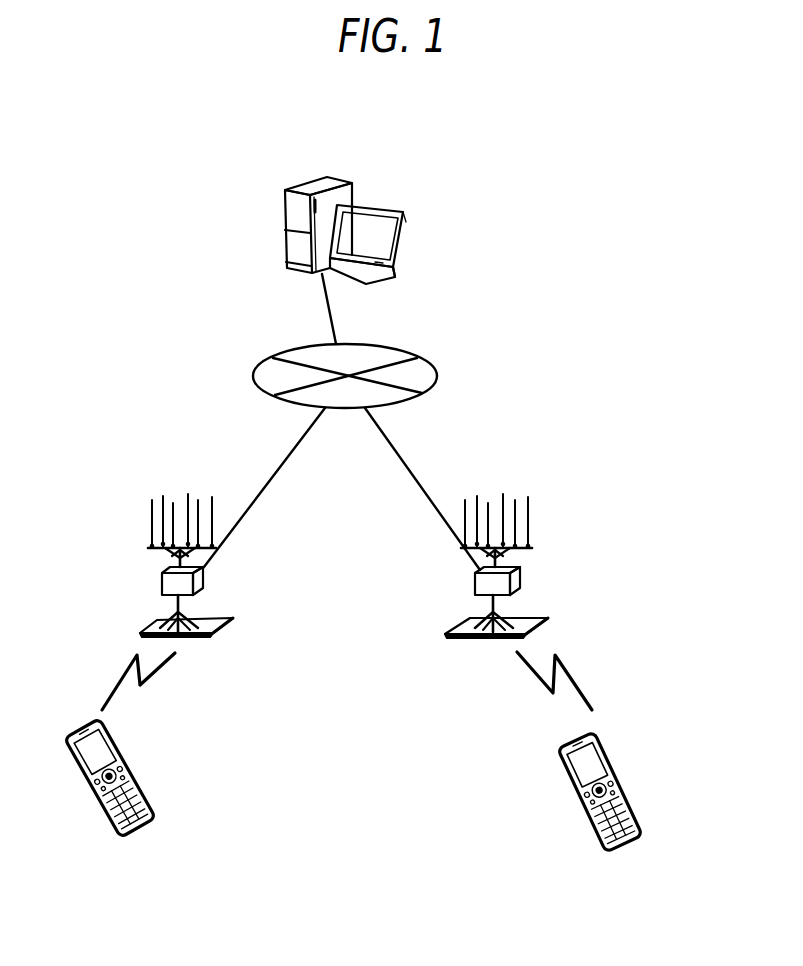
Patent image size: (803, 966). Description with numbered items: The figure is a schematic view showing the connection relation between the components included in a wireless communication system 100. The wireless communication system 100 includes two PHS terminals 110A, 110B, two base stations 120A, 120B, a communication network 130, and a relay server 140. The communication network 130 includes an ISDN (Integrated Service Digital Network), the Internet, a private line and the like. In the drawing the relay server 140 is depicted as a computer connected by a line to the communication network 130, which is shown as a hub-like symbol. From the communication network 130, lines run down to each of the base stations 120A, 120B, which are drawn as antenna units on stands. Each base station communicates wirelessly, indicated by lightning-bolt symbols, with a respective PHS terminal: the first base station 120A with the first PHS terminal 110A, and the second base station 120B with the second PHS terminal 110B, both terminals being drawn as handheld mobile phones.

The wireless communication system 100 is at (556, 238).
The PHS terminal 110A is at (137, 765).
The PHS terminal 110B is at (640, 778).
The base station 120A is at (205, 582).
The base station 120B is at (520, 581).
The communication network 130 is at (275, 358).
The relay server 140 is at (342, 178).